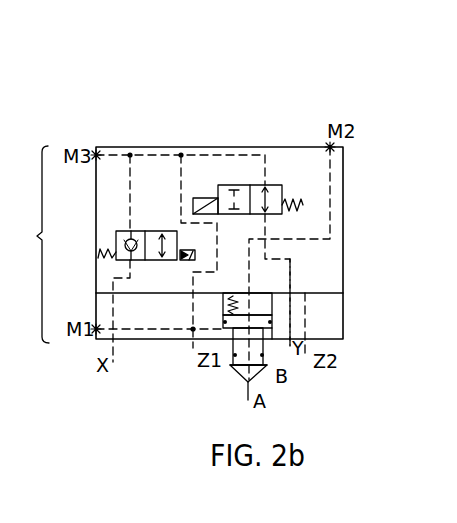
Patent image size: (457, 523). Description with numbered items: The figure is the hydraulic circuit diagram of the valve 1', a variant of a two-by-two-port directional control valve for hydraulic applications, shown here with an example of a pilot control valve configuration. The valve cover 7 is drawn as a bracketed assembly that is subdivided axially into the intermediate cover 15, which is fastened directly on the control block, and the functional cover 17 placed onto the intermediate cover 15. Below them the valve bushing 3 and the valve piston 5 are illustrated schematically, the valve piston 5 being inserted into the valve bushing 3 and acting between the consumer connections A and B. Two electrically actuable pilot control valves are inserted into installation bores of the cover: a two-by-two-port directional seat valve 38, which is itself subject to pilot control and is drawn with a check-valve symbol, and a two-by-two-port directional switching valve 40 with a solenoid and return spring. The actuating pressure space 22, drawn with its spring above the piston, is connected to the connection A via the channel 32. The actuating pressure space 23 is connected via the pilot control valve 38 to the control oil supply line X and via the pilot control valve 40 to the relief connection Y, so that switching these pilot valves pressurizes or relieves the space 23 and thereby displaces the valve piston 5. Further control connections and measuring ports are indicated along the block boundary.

The valve 1' is at (352, 63).
The valve bushing 3 is at (239, 373).
The valve piston 5 is at (241, 365).
The valve cover 7 is at (33, 244).
The intermediate cover 15 is at (333, 312).
The functional cover 17 is at (322, 257).
The actuating pressure space 22 is at (262, 301).
The actuating pressure space 23 is at (223, 336).
The channel 32 is at (262, 343).
The 2/2-port directional seat valve 38 is at (128, 231).
The 2/2-port directional switching valve 40 is at (283, 192).